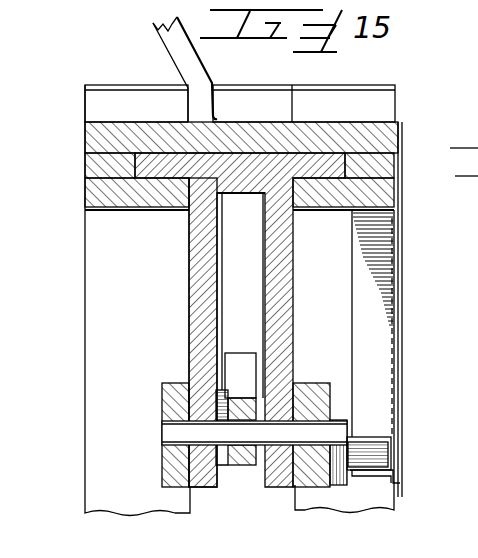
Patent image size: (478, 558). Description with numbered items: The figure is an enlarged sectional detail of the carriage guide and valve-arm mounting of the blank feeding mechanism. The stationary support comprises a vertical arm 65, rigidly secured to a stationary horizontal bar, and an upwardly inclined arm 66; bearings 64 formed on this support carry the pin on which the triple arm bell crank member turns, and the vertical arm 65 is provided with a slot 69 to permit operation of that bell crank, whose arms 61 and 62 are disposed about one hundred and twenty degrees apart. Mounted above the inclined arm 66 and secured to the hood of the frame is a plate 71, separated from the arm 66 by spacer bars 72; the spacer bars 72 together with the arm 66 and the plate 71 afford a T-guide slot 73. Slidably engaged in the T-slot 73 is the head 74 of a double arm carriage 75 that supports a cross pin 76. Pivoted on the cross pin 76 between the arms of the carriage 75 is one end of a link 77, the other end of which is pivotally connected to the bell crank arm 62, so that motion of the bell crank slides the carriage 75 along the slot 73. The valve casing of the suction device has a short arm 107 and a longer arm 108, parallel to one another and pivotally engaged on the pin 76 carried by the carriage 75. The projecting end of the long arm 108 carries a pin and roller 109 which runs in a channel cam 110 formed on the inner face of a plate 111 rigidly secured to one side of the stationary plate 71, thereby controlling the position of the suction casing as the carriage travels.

The bell crank arm 61 is at (200, 68).
The bell crank arm 62 is at (223, 293).
The bearings 64 is at (121, 100).
The vertical support arm 65 is at (137, 300).
The inclined support arm 66 is at (141, 193).
The slot 69 is at (190, 498).
The plate 71 is at (368, 140).
The spacer bars 72 is at (95, 168).
The T-guide slot 73 is at (313, 138).
The head 74 is at (325, 165).
The double arm carriage 75 is at (200, 266).
The cross pin 76 is at (175, 428).
The link 77 is at (244, 360).
The short arm 107 is at (166, 406).
The long arm 108 is at (313, 404).
The pin and roller 109 is at (382, 455).
The channel cam 110 is at (395, 478).
The plate 111 is at (400, 386).